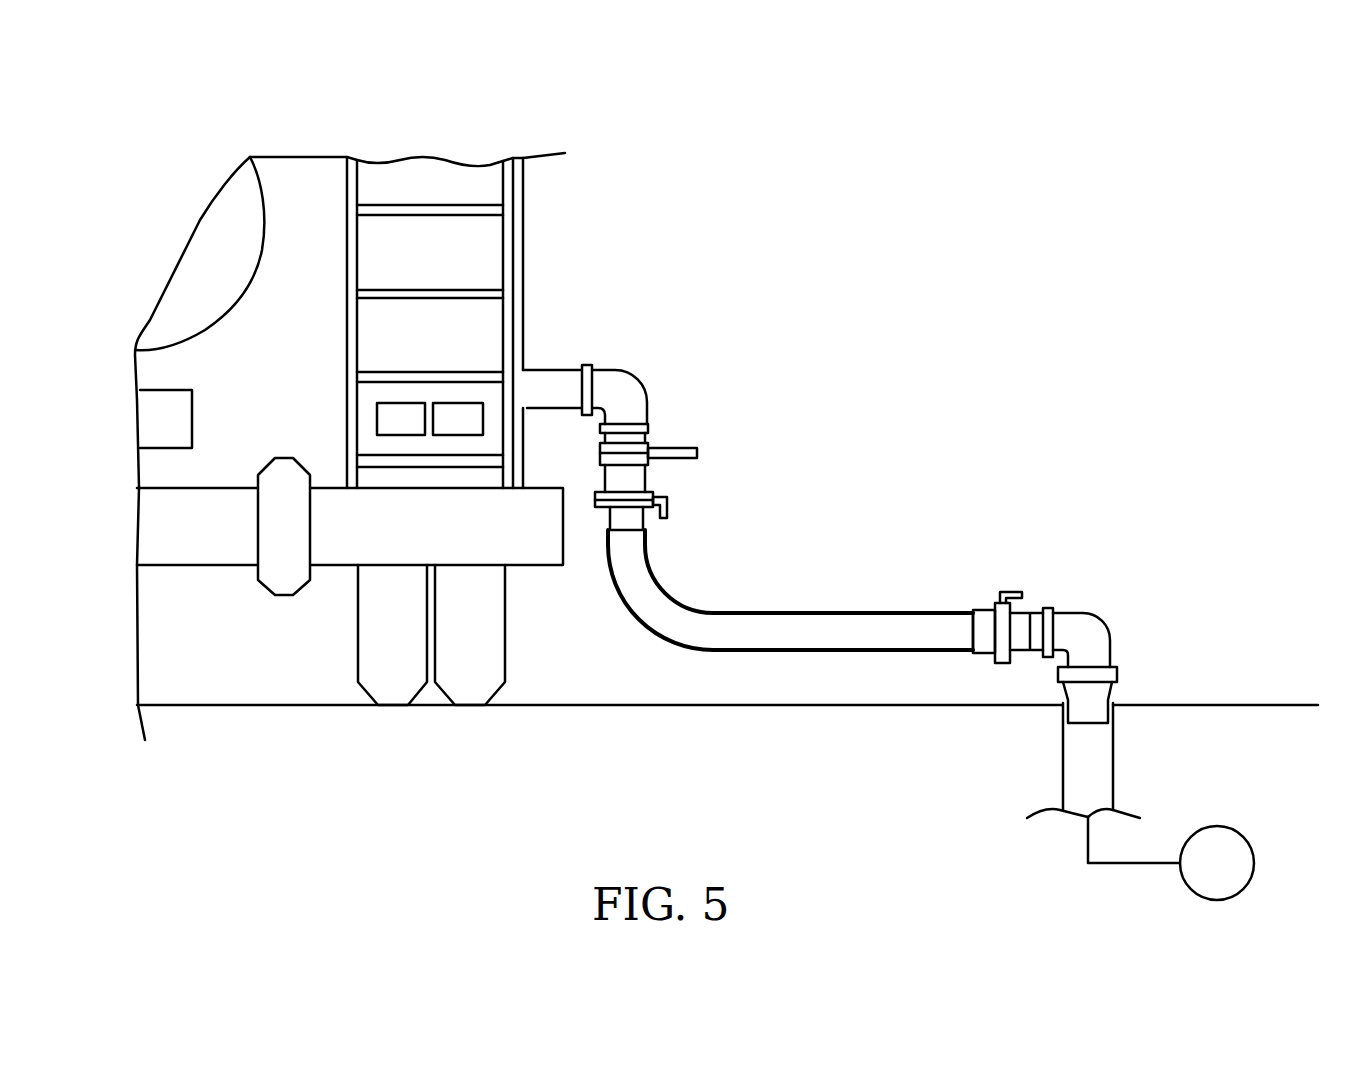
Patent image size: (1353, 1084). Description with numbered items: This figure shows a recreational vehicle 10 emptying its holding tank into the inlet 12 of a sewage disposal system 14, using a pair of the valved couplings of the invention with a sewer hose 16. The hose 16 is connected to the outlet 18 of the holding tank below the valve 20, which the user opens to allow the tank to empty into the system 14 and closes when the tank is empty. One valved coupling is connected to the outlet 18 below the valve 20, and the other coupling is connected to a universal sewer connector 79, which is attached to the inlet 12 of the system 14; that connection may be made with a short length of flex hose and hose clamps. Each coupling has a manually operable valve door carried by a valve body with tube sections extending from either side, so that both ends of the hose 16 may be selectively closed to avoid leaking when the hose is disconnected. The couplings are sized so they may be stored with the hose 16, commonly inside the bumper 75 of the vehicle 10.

The recreational vehicle 10 is at (527, 247).
The inlet 12 is at (1100, 772).
The sewage disposal system 14 is at (1223, 860).
The sewer hose 16 is at (821, 608).
The outlet 18 is at (628, 370).
The valve 20 is at (672, 447).
The bumper 75 is at (220, 535).
The universal sewer connector 79 is at (1090, 630).